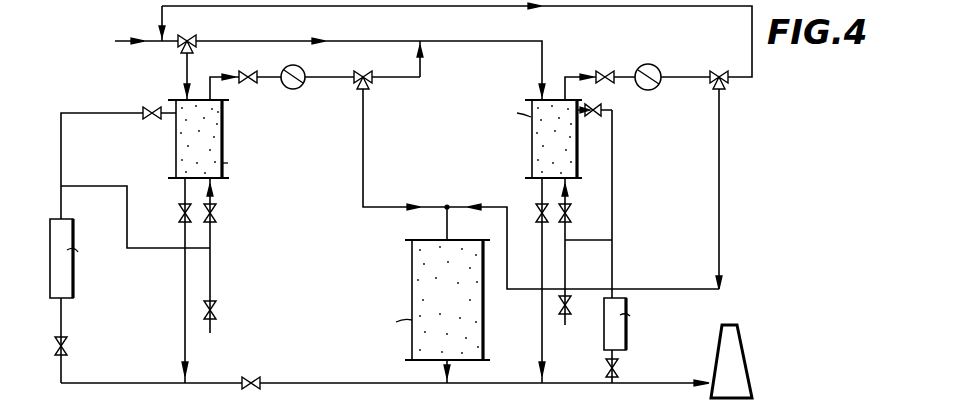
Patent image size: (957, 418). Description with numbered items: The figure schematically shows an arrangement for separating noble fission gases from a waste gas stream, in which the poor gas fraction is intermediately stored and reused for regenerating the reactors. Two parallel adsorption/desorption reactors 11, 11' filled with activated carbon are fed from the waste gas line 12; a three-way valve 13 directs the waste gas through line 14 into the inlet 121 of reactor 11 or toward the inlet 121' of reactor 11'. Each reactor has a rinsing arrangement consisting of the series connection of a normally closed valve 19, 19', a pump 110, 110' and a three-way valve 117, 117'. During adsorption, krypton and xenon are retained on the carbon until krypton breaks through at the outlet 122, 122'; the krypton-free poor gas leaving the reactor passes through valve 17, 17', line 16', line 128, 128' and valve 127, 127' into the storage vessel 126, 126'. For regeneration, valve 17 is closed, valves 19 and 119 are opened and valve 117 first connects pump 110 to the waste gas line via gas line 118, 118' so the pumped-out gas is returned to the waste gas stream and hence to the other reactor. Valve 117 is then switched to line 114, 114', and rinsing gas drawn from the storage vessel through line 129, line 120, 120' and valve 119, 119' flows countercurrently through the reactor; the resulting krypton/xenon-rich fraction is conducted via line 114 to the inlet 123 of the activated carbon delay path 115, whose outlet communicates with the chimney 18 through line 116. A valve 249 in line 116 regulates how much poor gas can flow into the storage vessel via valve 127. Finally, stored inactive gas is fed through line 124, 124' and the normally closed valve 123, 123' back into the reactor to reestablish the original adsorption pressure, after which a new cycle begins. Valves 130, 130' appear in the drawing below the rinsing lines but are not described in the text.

The adsorption/desorption reactor 11 is at (243, 139).
The second adsorption/desorption reactor 11' is at (493, 138).
The waste gas line 12 is at (129, 41).
The three-way valve 13 is at (190, 36).
The line 14 is at (184, 62).
The line 16' is at (525, 330).
The valve 17 is at (169, 280).
The valve 17' is at (530, 280).
The chimney 18 is at (731, 361).
The normally closed valve 19 is at (245, 75).
The normally closed valve 19' is at (600, 73).
The pump 110 is at (317, 90).
The pump 110' is at (672, 68).
The line 114 is at (541, 189).
The line 114' is at (740, 189).
The activated carbon delay path 115 is at (445, 296).
The line 116 is at (450, 369).
The three-way valve 117 is at (384, 69).
The three-way valve 117' is at (731, 68).
The gas line 118 is at (441, 59).
The gas line 118' is at (457, 40).
The valve 119 is at (226, 255).
The valve 119' is at (585, 251).
The line 120 is at (233, 263).
The line 120' is at (588, 258).
The inlet 121 is at (169, 87).
The inlet 121' is at (370, 69).
The outlet 122 is at (163, 190).
The outlet 122' is at (518, 191).
The normally closed valve 123 is at (254, 173).
The normally closed valve 123' is at (617, 113).
The line 124 is at (82, 98).
The line 124' is at (638, 204).
The storage vessel 126 is at (107, 298).
The storage vessel 126' is at (661, 336).
The valve 127 is at (82, 342).
The valve 127' is at (585, 371).
The line 128 is at (88, 360).
The line 128' is at (641, 373).
The line 129 is at (131, 190).
The drain valve 130 is at (231, 311).
The drain valve 130' is at (564, 329).
The valve 249 is at (248, 377).